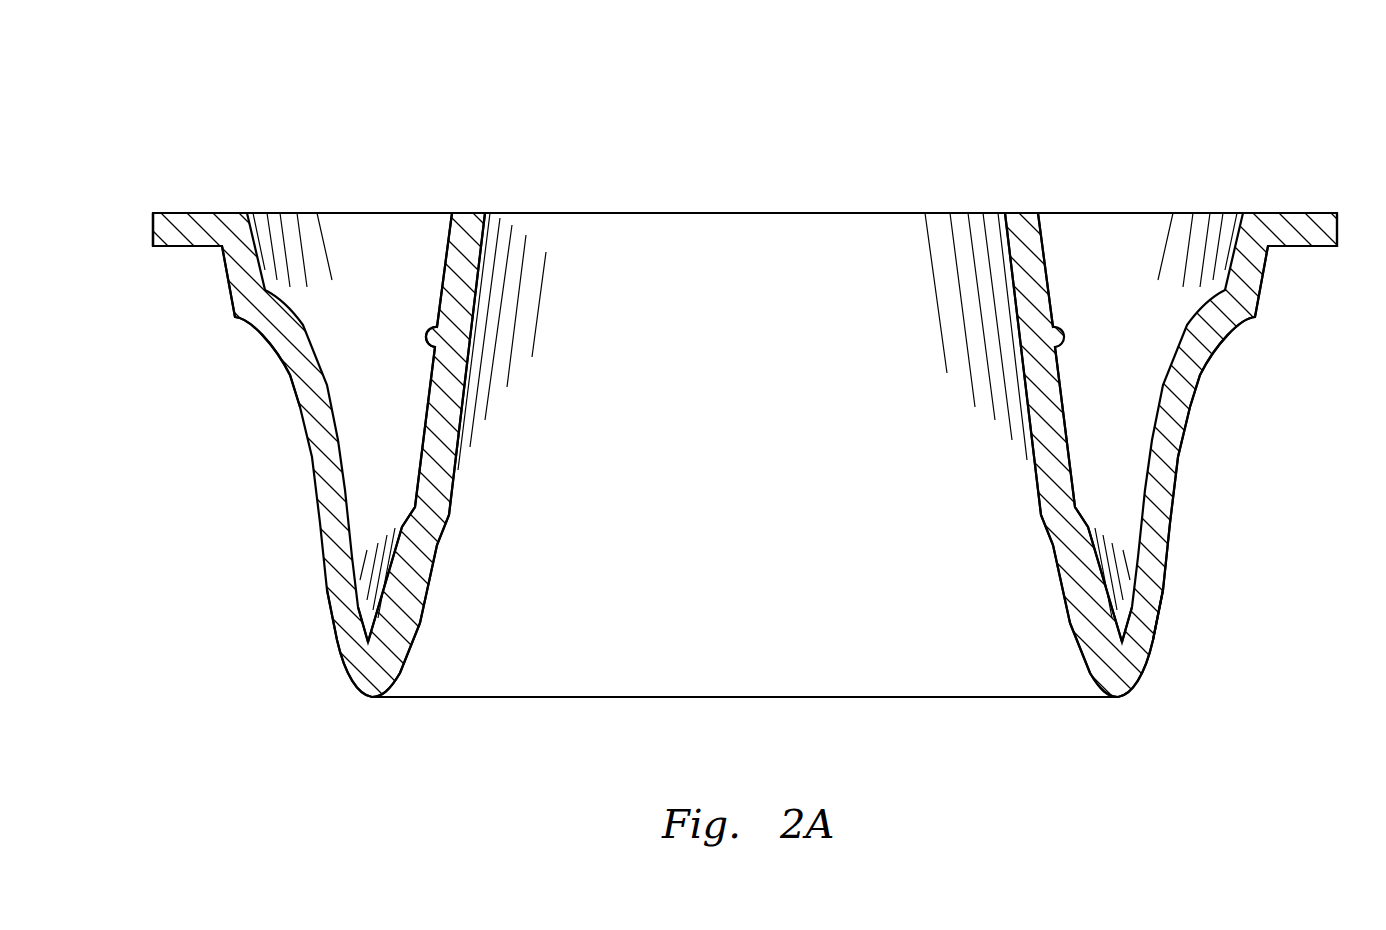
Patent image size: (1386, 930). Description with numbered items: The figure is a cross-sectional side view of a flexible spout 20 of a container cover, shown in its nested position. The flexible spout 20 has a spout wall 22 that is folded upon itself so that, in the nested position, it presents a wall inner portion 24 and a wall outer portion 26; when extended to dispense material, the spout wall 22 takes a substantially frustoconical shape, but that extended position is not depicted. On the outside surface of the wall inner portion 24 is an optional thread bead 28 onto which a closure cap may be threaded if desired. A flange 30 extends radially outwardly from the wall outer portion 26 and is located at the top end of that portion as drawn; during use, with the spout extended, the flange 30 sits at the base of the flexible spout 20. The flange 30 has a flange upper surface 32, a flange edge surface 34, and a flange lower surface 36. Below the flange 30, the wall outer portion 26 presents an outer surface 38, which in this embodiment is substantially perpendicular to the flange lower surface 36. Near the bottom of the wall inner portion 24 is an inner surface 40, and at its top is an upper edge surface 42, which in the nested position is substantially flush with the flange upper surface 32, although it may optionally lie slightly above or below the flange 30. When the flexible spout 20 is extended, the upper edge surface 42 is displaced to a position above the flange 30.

The flexible spout 20 is at (733, 185).
The spout wall 22 is at (1187, 478).
The wall inner portion 24 is at (1032, 473).
The wall outer portion 26 is at (1168, 583).
The thread bead 28 is at (423, 313).
The flange 30 is at (233, 190).
The flange upper surface 32 is at (192, 210).
The flange edge surface 34 is at (150, 232).
The flange lower surface 36 is at (192, 248).
The outer surface 38 is at (1267, 288).
The inner surface 40 is at (413, 640).
The upper edge surface 42 is at (475, 210).